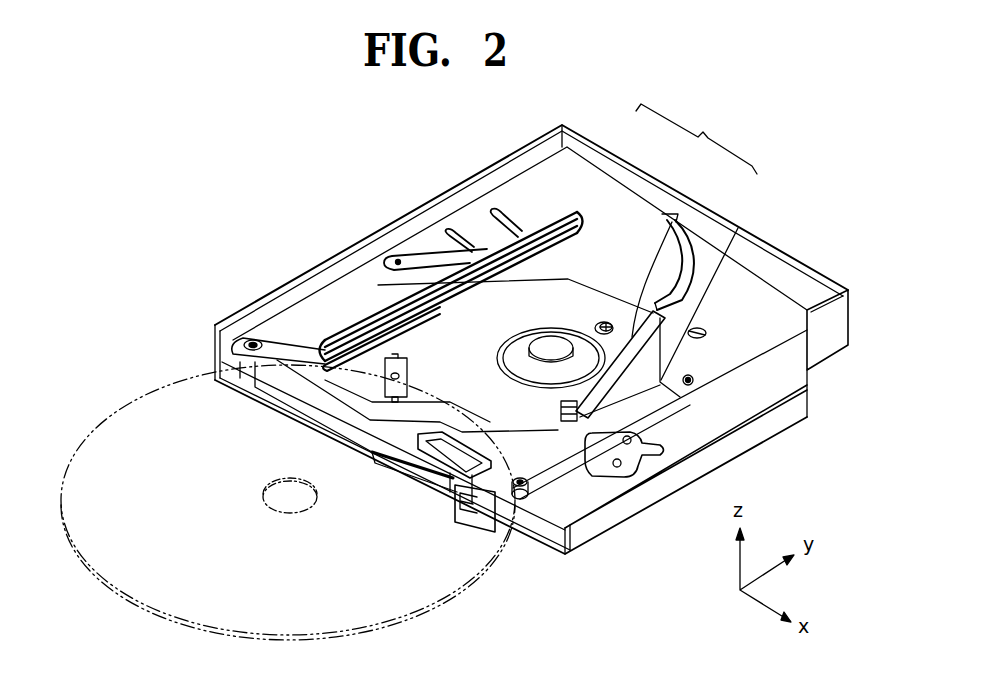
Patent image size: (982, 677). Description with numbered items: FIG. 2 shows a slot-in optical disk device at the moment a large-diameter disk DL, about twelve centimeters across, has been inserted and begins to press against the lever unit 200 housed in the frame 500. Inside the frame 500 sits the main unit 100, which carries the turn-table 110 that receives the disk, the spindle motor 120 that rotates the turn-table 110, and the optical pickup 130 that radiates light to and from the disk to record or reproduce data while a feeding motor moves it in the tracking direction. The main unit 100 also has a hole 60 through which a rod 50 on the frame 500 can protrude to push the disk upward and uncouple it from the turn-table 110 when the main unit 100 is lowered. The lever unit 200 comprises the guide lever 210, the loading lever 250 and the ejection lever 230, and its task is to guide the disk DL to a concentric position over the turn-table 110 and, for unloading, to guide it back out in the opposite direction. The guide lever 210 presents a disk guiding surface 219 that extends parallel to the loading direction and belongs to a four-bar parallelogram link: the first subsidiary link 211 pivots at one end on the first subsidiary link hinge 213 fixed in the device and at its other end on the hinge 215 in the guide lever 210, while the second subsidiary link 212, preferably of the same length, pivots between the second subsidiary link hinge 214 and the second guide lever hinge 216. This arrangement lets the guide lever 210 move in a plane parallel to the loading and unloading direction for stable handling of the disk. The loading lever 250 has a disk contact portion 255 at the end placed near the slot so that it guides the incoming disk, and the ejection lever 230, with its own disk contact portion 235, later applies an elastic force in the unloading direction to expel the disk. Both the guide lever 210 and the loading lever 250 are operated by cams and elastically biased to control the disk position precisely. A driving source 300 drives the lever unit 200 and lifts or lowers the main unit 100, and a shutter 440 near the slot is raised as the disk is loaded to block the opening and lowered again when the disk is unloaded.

The frame 500 is at (787, 258).
The lever unit 200 is at (696, 139).
The main unit 100 is at (536, 288).
The guide lever 210 is at (585, 217).
The hinge 215 is at (522, 228).
The second guide lever hinge 216 is at (385, 330).
The first subsidiary link hinge 213 is at (398, 258).
The first subsidiary link 211 is at (444, 250).
The disk guiding surface 219 is at (490, 222).
The second subsidiary link 212 is at (318, 340).
The second subsidiary link hinge 214 is at (253, 340).
The optical pickup 130 is at (447, 350).
The turn-table 110 is at (551, 347).
The rod 50 is at (607, 323).
The hole 60 is at (602, 323).
The spindle motor 120 is at (566, 418).
The ejection lever 230 is at (664, 213).
The loading lever 250 is at (700, 326).
The disk contact portion 235 is at (590, 470).
The disk contact portion 255 is at (522, 500).
The driving source 300 is at (497, 547).
The shutter 440 is at (415, 478).
The large-diameter disk DL is at (110, 437).